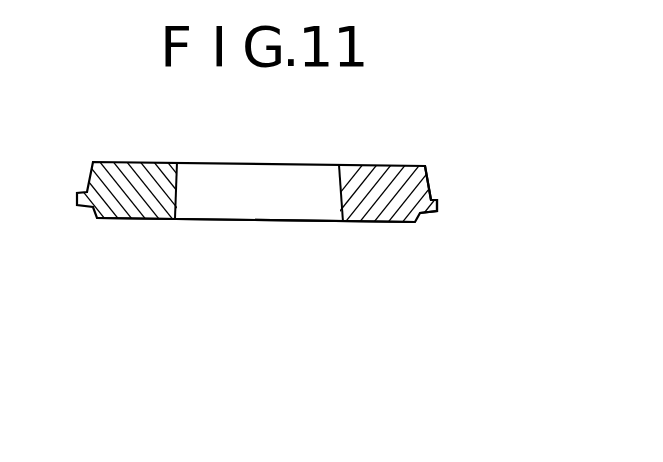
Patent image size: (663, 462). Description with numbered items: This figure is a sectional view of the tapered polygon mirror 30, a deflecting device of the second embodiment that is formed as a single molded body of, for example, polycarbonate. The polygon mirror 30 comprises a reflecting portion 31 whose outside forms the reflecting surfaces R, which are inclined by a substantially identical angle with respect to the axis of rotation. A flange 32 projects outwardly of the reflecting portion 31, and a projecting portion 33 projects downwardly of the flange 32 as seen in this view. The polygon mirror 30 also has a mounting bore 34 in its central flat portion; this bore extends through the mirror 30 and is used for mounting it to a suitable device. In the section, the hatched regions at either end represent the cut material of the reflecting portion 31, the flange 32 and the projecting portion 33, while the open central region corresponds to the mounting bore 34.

The tapered polygon mirror 30 is at (470, 177).
The reflecting portion 31 is at (371, 165).
The flange 32 is at (437, 207).
The projecting portion 33 is at (386, 225).
The mounting bore 34 is at (177, 195).
The reflecting surfaces R is at (432, 174).